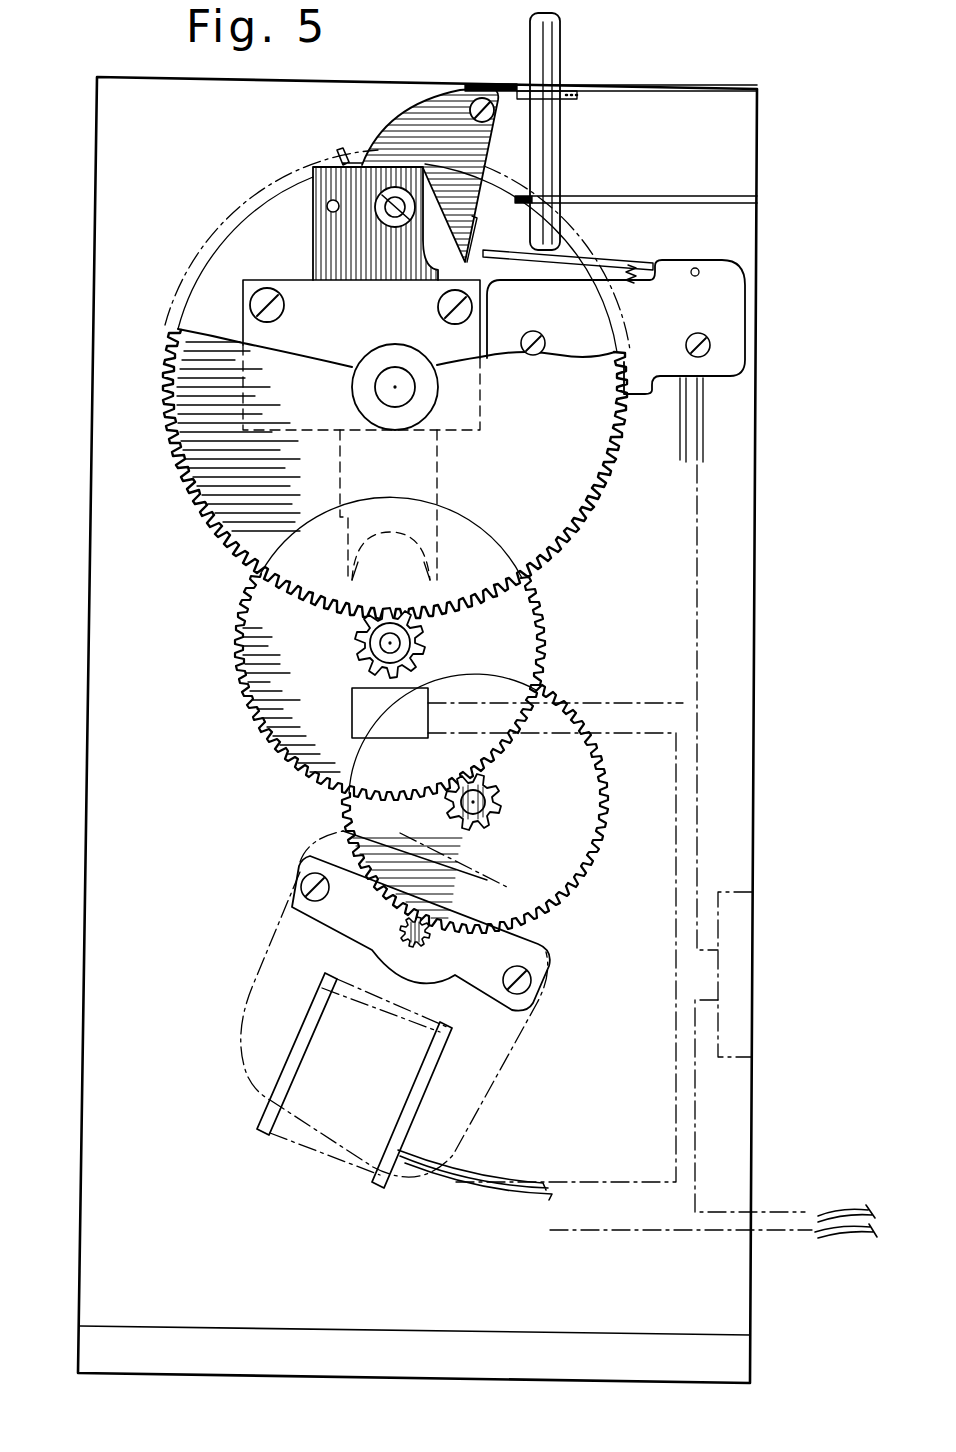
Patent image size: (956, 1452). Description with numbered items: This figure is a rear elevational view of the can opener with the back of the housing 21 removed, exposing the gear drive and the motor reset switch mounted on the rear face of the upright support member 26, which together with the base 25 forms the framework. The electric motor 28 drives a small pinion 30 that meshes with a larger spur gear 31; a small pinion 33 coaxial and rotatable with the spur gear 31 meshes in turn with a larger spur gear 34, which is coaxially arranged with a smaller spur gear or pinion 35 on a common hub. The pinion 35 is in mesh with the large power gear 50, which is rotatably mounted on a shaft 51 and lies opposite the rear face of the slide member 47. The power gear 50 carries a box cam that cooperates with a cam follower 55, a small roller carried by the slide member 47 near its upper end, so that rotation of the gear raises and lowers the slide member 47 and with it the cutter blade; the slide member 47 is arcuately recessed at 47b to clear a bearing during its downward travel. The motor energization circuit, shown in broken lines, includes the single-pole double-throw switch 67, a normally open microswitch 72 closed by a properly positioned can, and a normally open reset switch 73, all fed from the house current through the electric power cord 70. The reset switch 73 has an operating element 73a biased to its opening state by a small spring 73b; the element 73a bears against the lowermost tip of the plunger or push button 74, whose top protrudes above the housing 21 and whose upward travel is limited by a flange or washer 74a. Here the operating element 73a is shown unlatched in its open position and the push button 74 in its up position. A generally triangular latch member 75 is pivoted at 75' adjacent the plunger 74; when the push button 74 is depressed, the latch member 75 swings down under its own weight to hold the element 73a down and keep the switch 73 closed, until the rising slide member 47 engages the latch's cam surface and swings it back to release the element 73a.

The housing 21 is at (651, 84).
The base 25 is at (92, 1342).
The support member 26 is at (100, 1195).
The electric motor 28 is at (487, 1093).
The pinion 30 is at (425, 943).
The spur gear 31 is at (580, 777).
The pinion 33 is at (487, 812).
The spur gear 34 is at (532, 656).
The spur gear or pinion 35 is at (378, 645).
The slide member 47 is at (313, 240).
The arcuate recess 47b is at (437, 560).
The power gear 50 is at (243, 515).
The shaft 51 is at (405, 395).
The cam follower 55 is at (397, 222).
The single-pole double-throw switch 67 is at (733, 920).
The electric power cord 70 is at (848, 1215).
The microswitch 72 is at (352, 705).
The reset switch 73 is at (645, 380).
The operating element 73a is at (618, 246).
The spring 73b is at (638, 285).
The plunger or push button 74 is at (550, 146).
The flange or washer 74a is at (576, 98).
The latch member 75 is at (424, 175).
The pivot 75' is at (484, 81).